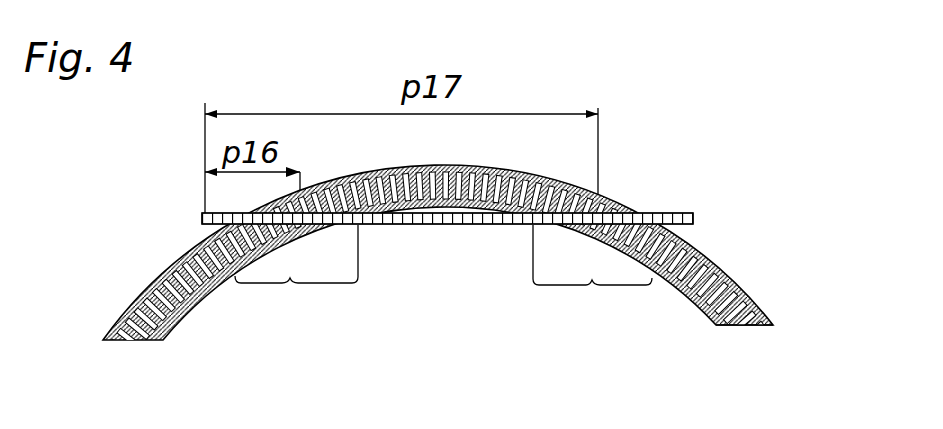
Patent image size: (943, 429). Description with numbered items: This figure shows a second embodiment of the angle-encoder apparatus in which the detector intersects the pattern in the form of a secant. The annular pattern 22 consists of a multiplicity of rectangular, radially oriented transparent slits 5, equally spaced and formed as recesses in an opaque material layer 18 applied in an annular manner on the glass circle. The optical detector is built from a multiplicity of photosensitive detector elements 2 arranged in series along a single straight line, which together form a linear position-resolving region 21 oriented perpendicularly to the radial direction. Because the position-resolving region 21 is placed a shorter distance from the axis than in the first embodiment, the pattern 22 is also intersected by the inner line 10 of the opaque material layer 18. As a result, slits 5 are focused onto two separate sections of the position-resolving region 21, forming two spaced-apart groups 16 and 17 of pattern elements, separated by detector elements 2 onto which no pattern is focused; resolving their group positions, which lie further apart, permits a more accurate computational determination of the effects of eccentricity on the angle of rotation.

The detector elements 2 is at (686, 214).
The transparent slits 5 is at (738, 307).
The inner line of the opaque material layer 10 is at (678, 292).
The group of pattern elements 16 is at (296, 283).
The group of pattern elements 17 is at (592, 285).
The opaque material layer 18 is at (694, 305).
The position-resolving region 21 is at (706, 221).
The annular pattern 22 is at (206, 312).